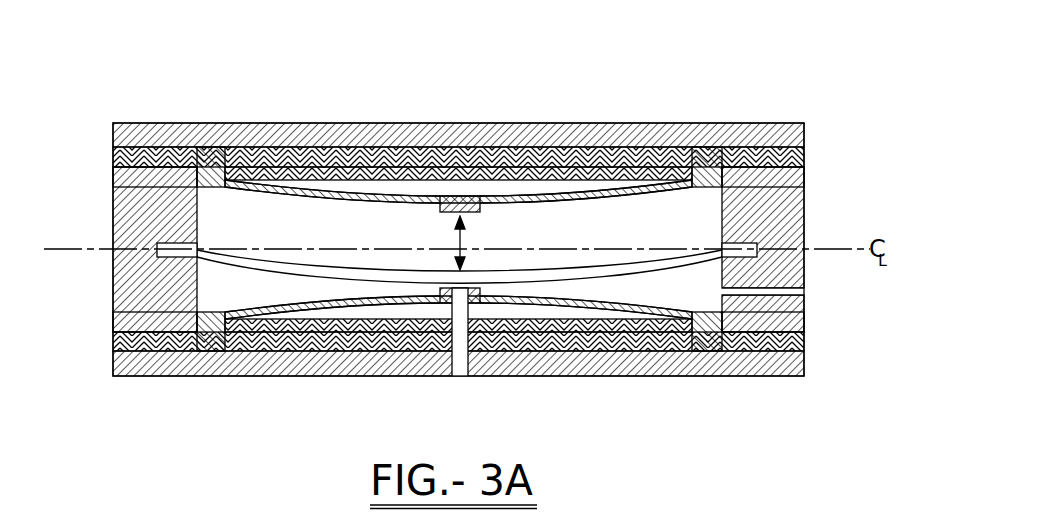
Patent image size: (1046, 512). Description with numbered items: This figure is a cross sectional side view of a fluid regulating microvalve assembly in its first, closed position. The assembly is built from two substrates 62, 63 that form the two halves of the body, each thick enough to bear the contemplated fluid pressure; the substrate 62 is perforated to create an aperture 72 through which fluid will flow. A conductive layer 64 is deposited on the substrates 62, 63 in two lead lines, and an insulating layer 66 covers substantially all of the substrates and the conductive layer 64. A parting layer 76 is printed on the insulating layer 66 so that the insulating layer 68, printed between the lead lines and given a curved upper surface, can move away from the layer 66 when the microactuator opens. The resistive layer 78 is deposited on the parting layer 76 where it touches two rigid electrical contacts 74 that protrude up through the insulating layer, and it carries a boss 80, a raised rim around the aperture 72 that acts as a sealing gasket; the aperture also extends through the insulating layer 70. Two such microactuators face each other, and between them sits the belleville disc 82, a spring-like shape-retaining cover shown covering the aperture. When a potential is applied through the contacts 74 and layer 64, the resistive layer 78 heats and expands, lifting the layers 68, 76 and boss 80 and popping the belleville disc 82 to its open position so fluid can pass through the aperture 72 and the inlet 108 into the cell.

The substrate 62 is at (172, 378).
The substrate 63 is at (783, 140).
The conductive layer 64 is at (207, 158).
The insulating layer 66 is at (118, 345).
The insulating layer 68 is at (345, 183).
The insulating layer 70 is at (464, 200).
The aperture 72 is at (456, 380).
The electrical contacts 74 is at (170, 182).
The parting layer 76 is at (425, 175).
The resistive layer 78 is at (594, 184).
The boss 80 is at (525, 175).
The belleville disc 82 is at (200, 245).
The inlet 108 is at (785, 291).